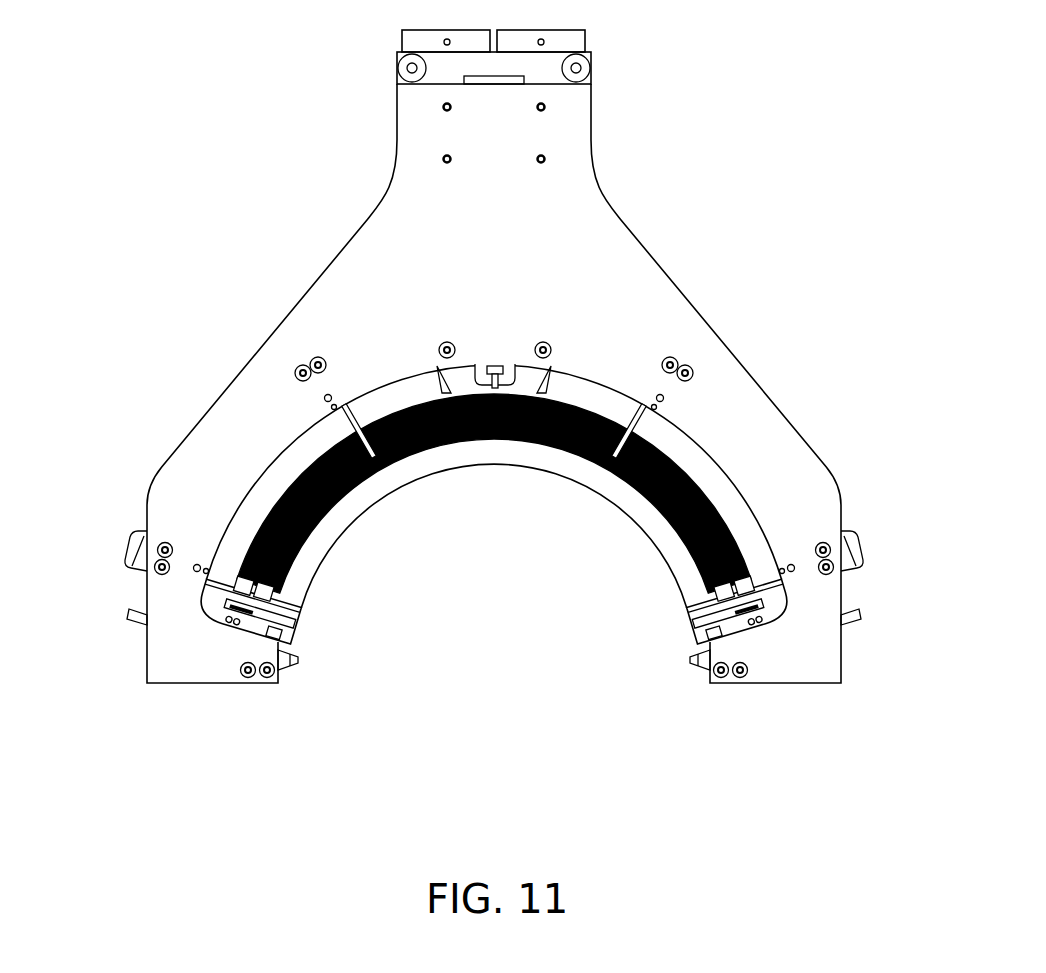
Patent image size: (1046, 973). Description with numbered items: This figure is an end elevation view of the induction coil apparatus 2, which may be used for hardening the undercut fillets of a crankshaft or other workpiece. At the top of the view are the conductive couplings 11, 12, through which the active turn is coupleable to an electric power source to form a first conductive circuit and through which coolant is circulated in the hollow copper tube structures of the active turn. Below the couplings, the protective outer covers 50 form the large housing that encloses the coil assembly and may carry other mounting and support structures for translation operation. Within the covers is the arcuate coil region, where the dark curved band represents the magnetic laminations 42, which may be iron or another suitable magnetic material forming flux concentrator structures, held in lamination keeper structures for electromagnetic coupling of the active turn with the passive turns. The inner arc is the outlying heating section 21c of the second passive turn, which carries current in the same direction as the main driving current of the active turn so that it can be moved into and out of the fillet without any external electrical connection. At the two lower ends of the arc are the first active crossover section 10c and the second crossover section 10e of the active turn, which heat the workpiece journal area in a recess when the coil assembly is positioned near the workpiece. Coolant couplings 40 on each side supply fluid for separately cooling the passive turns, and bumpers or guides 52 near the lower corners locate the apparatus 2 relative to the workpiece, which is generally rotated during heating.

The induction coil apparatus 2 is at (226, 113).
The conductive coupling 11 is at (402, 46).
The conductive coupling 12 is at (586, 46).
The protective outer cover 50 is at (343, 273).
The laminations 42 is at (300, 475).
The outlying heating section 21c is at (600, 482).
The first active crossover section 10c is at (295, 638).
The second crossover section 10e is at (693, 638).
The coolant coupling 40 is at (128, 614).
The bumpers or guides 52 is at (297, 662).